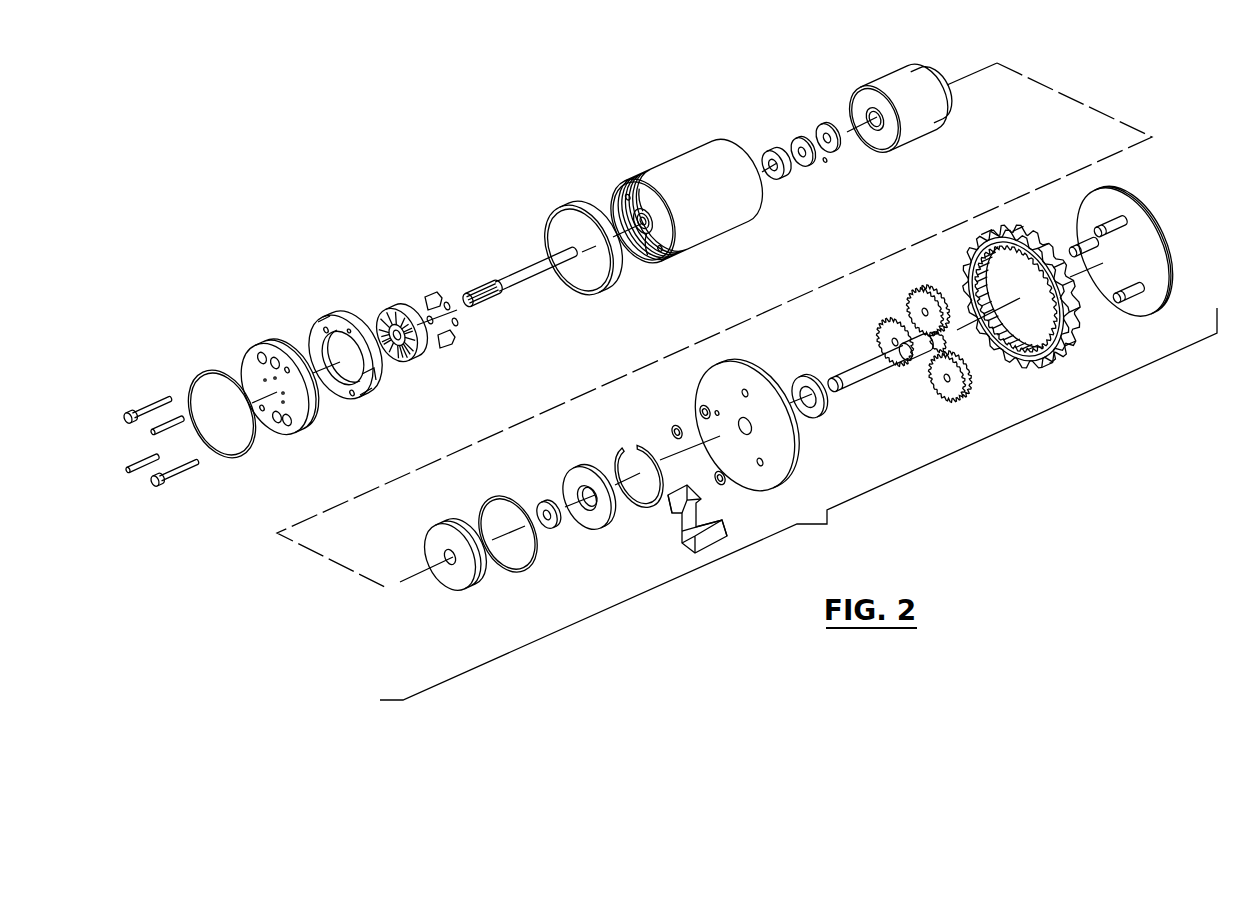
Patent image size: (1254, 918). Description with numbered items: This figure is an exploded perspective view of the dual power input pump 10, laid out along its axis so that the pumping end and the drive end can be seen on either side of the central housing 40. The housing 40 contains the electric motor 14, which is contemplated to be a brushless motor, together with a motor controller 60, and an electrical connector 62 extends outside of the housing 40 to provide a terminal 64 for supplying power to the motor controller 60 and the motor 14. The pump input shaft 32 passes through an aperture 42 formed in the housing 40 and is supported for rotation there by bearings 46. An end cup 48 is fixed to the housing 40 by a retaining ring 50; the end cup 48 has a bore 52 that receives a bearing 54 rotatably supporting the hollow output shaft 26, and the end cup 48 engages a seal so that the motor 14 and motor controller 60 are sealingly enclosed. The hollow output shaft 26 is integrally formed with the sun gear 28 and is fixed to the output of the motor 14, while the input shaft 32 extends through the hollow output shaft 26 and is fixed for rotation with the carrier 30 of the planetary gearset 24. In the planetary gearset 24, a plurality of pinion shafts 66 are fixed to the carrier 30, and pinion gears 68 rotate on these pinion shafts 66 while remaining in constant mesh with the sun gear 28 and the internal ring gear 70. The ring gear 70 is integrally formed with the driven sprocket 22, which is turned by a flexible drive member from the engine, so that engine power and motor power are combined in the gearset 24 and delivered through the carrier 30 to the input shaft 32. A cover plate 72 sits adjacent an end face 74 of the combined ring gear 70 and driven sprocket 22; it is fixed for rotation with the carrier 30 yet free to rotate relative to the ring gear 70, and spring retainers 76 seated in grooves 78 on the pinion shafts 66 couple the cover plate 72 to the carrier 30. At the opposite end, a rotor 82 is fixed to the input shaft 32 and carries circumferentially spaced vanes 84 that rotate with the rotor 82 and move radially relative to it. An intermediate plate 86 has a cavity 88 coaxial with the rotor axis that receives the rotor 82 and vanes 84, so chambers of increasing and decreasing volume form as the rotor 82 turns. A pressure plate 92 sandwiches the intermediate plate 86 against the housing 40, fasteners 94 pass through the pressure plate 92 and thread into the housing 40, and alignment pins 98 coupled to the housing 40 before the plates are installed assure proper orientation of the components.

The dual power input pump 10 is at (636, 88).
The electric motor 14 is at (888, 80).
The driven sprocket 22 is at (1003, 235).
The planetary gearset 24 is at (875, 295).
The hollow output shaft 26 is at (853, 366).
The sun gear 28 is at (945, 345).
The carrier 30 is at (1143, 260).
The pump input shaft 32 is at (520, 277).
The housing 40 is at (677, 165).
The aperture 42 is at (636, 235).
The bearings 46 is at (778, 152).
The end cup 48 is at (583, 468).
The retaining ring 50 is at (632, 448).
The bore 52 is at (584, 514).
The bearing 54 is at (545, 505).
The motor controller 60 is at (455, 527).
The electrical connector 62 is at (682, 528).
The terminal 64 is at (716, 526).
The pinion shafts 66 is at (1133, 295).
The pinion gears 68 is at (943, 390).
The internal ring gear 70 is at (982, 278).
The cover plate 72 is at (725, 375).
The end face 74 is at (990, 250).
The spring retainers 76 is at (703, 418).
The grooves 78 is at (1072, 248).
The rotor 82 is at (395, 312).
The vanes 84 is at (452, 296).
The intermediate plate 86 is at (340, 318).
The cavity 88 is at (337, 380).
The pressure plate 92 is at (280, 347).
The fasteners 94 is at (157, 398).
The alignment pins 98 is at (174, 421).